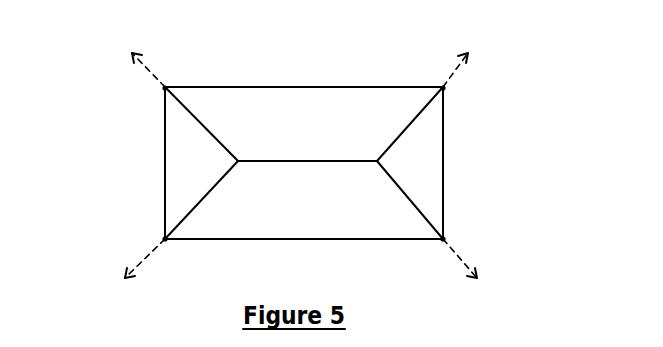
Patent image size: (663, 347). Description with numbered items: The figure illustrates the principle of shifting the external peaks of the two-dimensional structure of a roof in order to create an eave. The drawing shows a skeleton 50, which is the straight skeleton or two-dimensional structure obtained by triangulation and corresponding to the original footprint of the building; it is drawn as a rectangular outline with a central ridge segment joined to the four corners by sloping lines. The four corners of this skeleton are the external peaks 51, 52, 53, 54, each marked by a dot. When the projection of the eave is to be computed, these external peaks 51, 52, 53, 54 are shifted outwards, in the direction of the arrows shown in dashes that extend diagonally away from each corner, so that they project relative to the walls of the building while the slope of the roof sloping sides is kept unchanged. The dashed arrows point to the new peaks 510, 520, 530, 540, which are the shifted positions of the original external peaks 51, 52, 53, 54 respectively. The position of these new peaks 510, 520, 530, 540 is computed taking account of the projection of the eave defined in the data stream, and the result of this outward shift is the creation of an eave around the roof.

The skeleton 50 is at (317, 87).
The external peak 51 is at (165, 89).
The external peak 52 is at (444, 89).
The external peak 53 is at (444, 239).
The external peak 54 is at (165, 241).
The new peak 510 is at (132, 53).
The new peak 520 is at (468, 53).
The new peak 530 is at (477, 278).
The new peak 540 is at (125, 278).